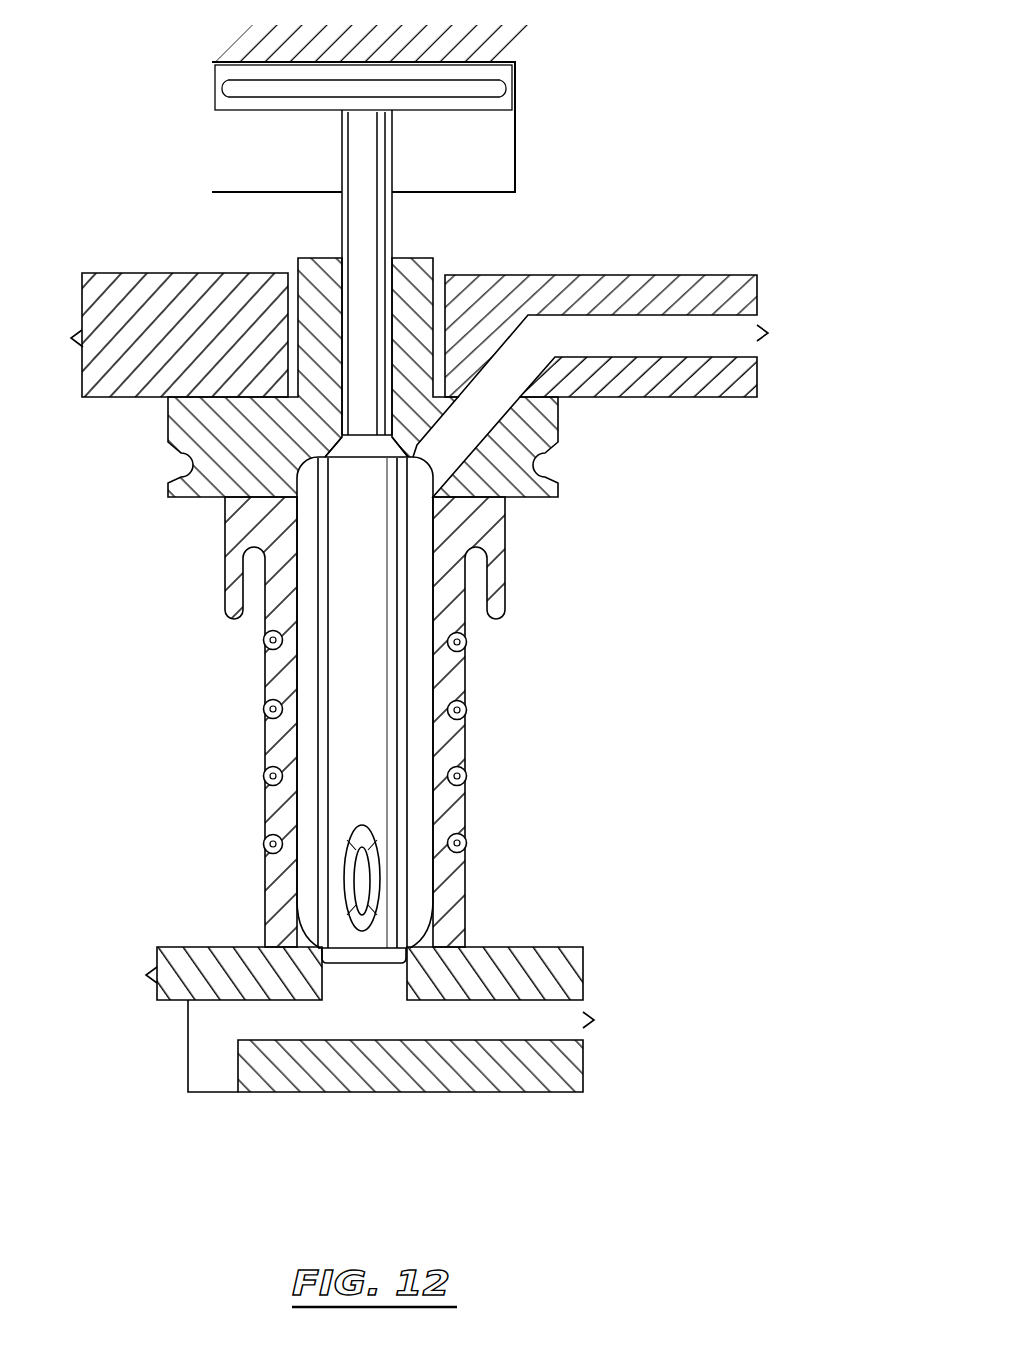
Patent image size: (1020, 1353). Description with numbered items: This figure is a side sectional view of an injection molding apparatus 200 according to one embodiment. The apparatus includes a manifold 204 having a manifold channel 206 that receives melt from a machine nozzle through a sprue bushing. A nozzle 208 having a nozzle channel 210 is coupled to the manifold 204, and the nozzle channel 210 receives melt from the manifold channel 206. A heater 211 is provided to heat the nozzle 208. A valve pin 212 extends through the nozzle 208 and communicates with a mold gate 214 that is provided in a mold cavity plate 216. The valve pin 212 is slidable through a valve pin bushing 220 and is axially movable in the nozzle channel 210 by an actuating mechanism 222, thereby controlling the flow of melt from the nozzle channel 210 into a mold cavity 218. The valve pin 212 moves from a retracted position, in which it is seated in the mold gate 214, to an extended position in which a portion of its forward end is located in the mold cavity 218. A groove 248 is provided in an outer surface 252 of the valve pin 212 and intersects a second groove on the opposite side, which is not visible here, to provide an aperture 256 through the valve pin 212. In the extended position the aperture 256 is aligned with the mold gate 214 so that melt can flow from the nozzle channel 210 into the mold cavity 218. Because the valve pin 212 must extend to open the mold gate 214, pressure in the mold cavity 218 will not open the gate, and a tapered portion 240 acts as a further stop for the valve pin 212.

The injection molding apparatus 200 is at (706, 185).
The actuating mechanism 222 is at (520, 92).
The valve pin bushing 220 is at (414, 268).
The tapered portion 240 is at (333, 442).
The manifold 204 is at (692, 380).
The manifold channel 206 is at (628, 335).
The nozzle 208 is at (453, 680).
The heater 211 is at (468, 642).
The nozzle channel 210 is at (426, 814).
The valve pin 212 is at (353, 660).
The groove 248 is at (350, 877).
The outer surface 252 is at (413, 872).
The aperture 256 is at (368, 900).
The mold cavity plate 216 is at (180, 962).
The mold cavity 218 is at (212, 1084).
The mold gate 214 is at (387, 983).